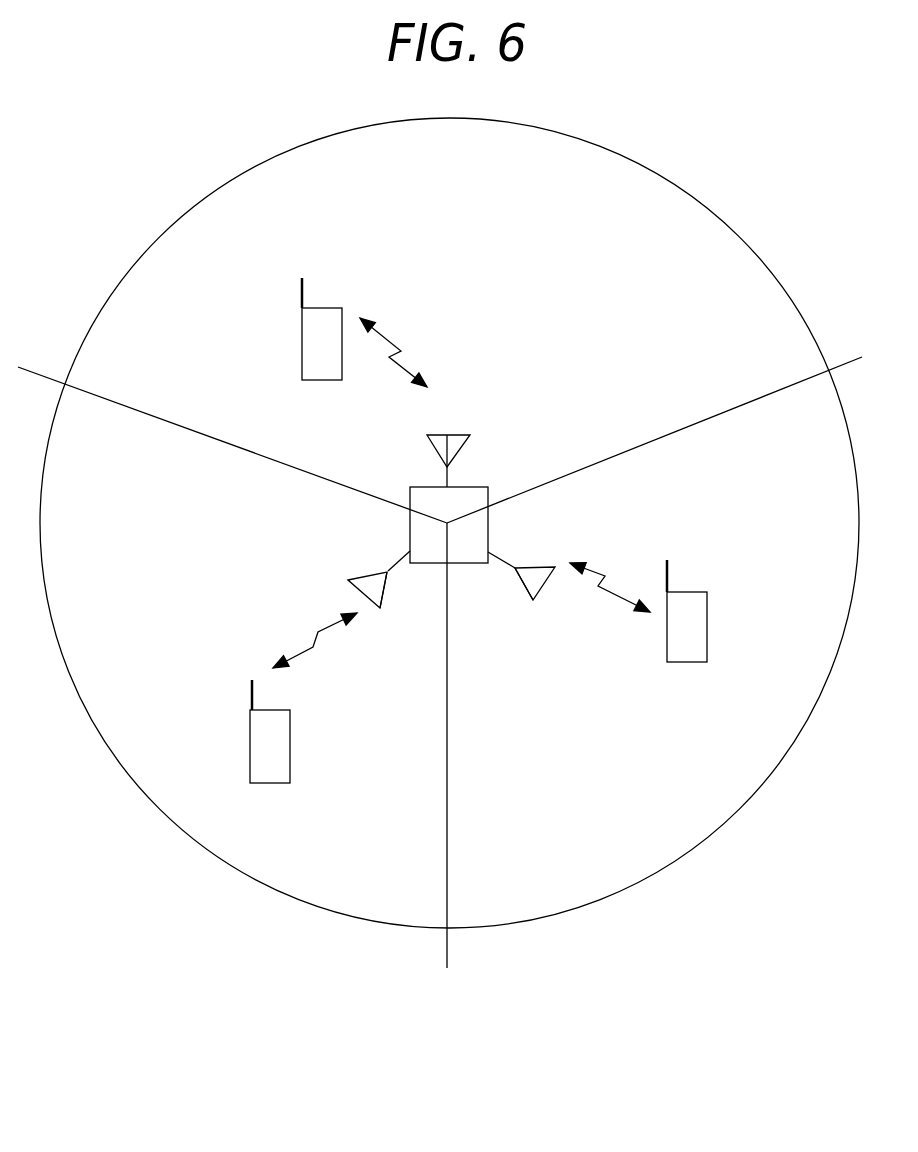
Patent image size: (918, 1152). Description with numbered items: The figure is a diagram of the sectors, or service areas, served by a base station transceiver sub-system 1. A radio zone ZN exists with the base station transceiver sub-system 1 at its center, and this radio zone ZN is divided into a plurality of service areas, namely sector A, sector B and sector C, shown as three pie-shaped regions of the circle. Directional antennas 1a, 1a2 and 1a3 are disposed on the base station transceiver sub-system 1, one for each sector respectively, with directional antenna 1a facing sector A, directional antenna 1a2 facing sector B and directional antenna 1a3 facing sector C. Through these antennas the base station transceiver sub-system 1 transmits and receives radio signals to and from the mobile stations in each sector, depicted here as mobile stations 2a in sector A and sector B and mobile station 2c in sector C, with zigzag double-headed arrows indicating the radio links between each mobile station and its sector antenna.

The base station transceiver sub-system 1 is at (475, 485).
The directional antenna 1a is at (462, 433).
The directional antenna 1a2 is at (382, 600).
The directional antenna 1a3 is at (523, 590).
The mobile station 2a is at (320, 380).
The mobile station 2c is at (707, 638).
The radio zone ZN is at (712, 838).